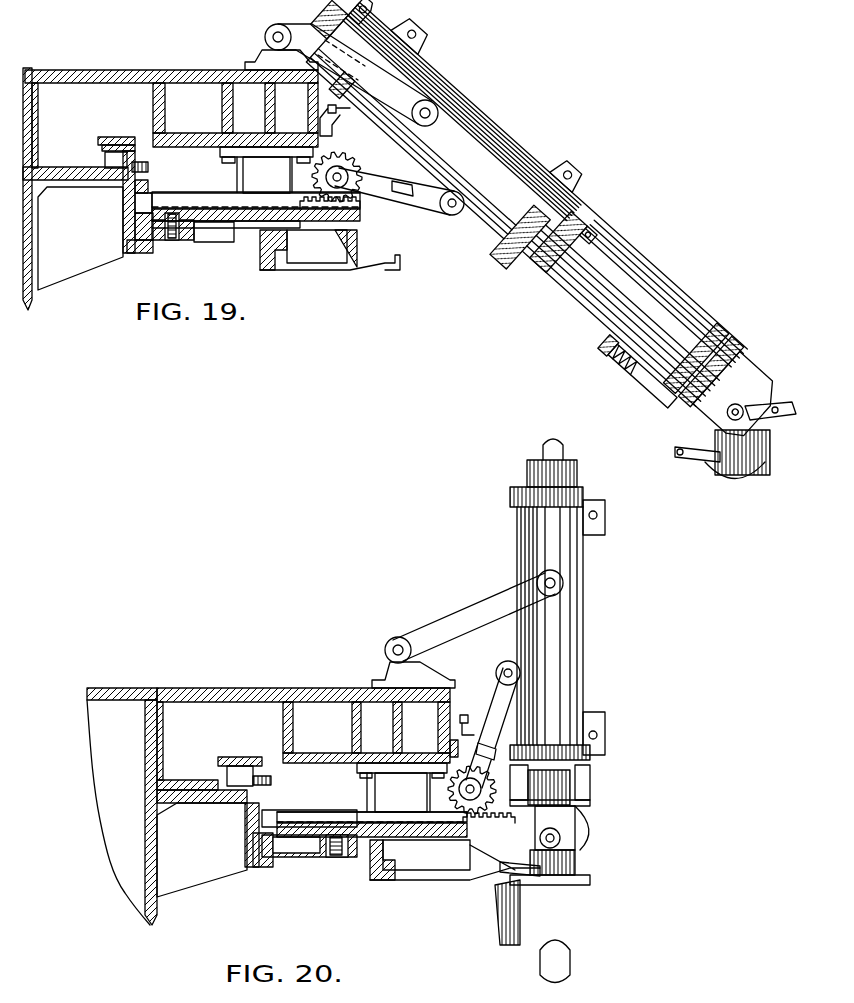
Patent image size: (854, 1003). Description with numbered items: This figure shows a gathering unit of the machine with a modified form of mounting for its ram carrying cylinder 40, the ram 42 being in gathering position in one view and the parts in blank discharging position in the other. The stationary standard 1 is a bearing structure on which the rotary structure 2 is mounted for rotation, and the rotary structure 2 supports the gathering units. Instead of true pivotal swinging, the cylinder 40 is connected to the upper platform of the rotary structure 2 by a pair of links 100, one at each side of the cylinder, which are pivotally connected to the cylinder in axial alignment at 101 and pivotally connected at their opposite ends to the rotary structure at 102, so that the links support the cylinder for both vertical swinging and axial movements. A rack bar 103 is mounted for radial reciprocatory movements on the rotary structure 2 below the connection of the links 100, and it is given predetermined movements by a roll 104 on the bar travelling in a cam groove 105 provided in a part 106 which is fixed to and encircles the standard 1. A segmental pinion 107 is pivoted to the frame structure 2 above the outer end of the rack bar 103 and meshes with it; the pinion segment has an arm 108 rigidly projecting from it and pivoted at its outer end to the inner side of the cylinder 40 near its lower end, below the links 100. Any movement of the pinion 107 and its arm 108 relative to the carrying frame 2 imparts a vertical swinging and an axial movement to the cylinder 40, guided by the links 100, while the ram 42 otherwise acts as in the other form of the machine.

In FIG. 19, the standard 1 is at (30, 288).
In FIG. 20, the standard 1 is at (113, 690).
In FIG. 19, the rotary structure 2 is at (95, 72).
In FIG. 20, the rotary structure 2 is at (238, 690).
In FIG. 19, the cylinder 40 is at (500, 160).
In FIG. 20, the cylinder 40 is at (570, 655).
In FIG. 19, the ram 42 is at (640, 330).
In FIG. 19, the links 100 is at (395, 95).
In FIG. 20, the links 100 is at (450, 612).
In FIG. 19, the pivotal connection of links to cylinder 101 is at (438, 113).
In FIG. 20, the pivotal connection of links to cylinder 101 is at (565, 584).
In FIG. 19, the pivotal connection of links to rotary structure 102 is at (265, 38).
In FIG. 20, the pivotal connection of links to rotary structure 102 is at (385, 651).
In FIG. 19, the rack bar 103 is at (285, 215).
In FIG. 19, the roll 104 is at (128, 217).
In FIG. 20, the roll 104 is at (345, 838).
In FIG. 19, the cam groove 105 is at (168, 243).
In FIG. 20, the cam groove 105 is at (345, 858).
In FIG. 19, the part 106 is at (208, 244).
In FIG. 20, the part 106 is at (298, 860).
In FIG. 19, the segmental pinion 107 is at (352, 198).
In FIG. 19, the arm 108 is at (415, 203).
In FIG. 20, the arm 108 is at (495, 706).